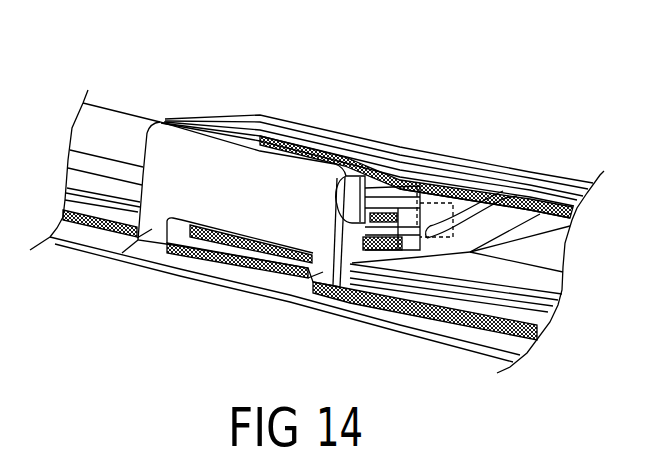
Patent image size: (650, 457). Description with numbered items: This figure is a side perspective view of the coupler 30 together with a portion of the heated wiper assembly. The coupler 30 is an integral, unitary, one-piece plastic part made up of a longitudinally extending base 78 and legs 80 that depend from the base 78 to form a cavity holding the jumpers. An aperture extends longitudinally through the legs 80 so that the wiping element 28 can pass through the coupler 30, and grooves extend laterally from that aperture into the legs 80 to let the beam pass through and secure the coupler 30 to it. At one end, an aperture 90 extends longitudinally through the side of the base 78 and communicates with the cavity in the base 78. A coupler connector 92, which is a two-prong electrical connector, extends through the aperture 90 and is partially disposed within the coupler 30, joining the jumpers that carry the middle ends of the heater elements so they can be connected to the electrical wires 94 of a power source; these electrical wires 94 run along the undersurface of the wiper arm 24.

The wiper arm 24 is at (542, 172).
The wiping element 28 is at (446, 342).
The coupler 30 is at (176, 121).
The base 78 is at (262, 197).
The legs 80 is at (143, 232).
The aperture 90 is at (352, 185).
The coupler connector 92 is at (426, 180).
The electrical wires 94 is at (450, 225).